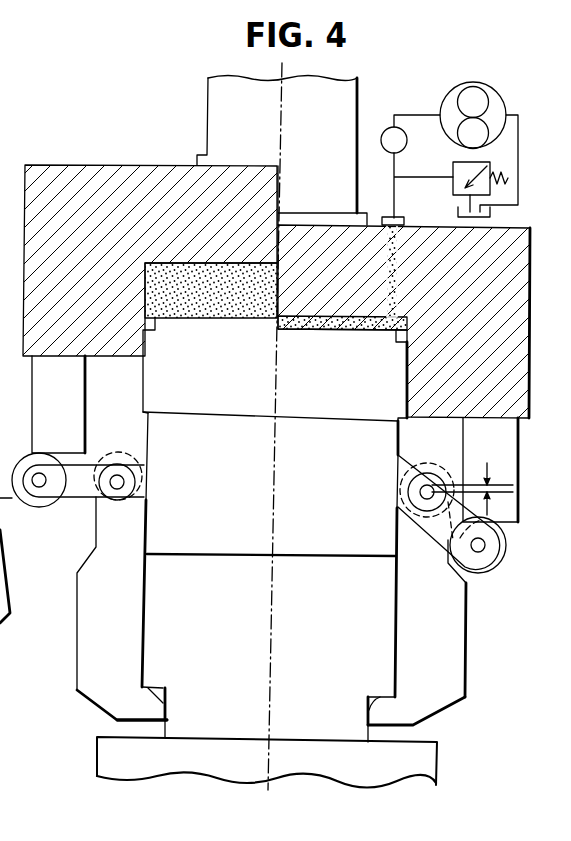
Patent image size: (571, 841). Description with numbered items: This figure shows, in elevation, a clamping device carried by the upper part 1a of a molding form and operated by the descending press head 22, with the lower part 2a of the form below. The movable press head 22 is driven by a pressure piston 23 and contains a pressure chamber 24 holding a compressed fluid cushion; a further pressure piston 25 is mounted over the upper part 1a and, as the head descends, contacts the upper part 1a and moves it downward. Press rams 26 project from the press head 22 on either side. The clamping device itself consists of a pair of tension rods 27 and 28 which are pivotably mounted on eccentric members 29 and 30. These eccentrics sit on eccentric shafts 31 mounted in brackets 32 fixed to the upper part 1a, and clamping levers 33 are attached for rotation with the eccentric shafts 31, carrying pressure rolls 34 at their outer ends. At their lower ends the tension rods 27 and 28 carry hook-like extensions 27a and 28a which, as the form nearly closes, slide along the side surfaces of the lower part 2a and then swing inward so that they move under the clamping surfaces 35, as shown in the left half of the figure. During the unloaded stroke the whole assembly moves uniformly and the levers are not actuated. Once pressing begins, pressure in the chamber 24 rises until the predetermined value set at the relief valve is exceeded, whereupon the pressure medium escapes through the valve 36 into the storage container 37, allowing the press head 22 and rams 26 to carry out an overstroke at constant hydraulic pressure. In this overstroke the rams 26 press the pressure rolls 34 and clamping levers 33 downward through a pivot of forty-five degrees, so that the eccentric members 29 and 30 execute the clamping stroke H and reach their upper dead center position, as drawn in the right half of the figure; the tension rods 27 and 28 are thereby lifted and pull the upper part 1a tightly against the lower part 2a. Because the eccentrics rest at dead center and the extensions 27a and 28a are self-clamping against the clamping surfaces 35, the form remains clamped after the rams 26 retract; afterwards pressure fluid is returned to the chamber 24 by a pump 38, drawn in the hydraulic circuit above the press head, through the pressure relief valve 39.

The upper part of the form 1a is at (287, 494).
The lower part of the form 2a is at (301, 637).
The press head 22 is at (115, 172).
The pressure piston 23 is at (233, 88).
The pressure chamber 24 is at (298, 326).
The pressure piston 25 is at (290, 403).
The press rams 26 is at (72, 388).
The tension rod 27 is at (85, 648).
The hook-like extension 27a is at (147, 705).
The tension rod 28 is at (457, 633).
The hook-like extension 28a is at (427, 715).
The eccentric member 29 is at (140, 450).
The eccentric member 30 is at (433, 470).
The eccentric shaft 31 is at (95, 495).
The bracket 32 is at (140, 483).
The clamping lever 33 is at (57, 488).
The pressure roll 34 is at (498, 548).
The clamping surface 35 is at (167, 707).
The pressure relief valve 36 is at (480, 173).
The storage container 37 is at (490, 213).
The pump 38 is at (503, 104).
The pressure relief valve 39 is at (390, 130).
The clamping stroke H is at (498, 487).